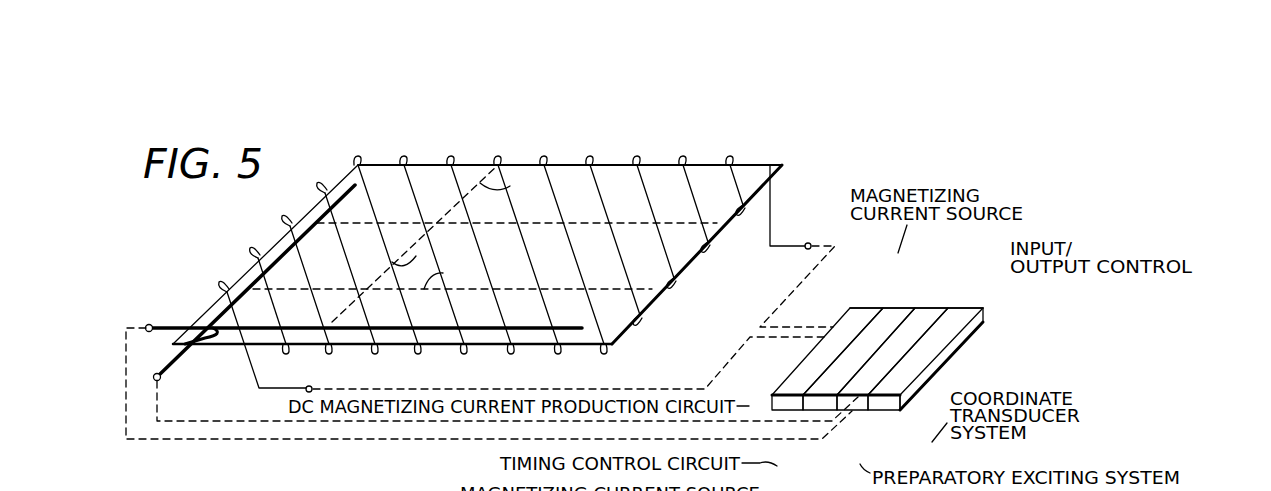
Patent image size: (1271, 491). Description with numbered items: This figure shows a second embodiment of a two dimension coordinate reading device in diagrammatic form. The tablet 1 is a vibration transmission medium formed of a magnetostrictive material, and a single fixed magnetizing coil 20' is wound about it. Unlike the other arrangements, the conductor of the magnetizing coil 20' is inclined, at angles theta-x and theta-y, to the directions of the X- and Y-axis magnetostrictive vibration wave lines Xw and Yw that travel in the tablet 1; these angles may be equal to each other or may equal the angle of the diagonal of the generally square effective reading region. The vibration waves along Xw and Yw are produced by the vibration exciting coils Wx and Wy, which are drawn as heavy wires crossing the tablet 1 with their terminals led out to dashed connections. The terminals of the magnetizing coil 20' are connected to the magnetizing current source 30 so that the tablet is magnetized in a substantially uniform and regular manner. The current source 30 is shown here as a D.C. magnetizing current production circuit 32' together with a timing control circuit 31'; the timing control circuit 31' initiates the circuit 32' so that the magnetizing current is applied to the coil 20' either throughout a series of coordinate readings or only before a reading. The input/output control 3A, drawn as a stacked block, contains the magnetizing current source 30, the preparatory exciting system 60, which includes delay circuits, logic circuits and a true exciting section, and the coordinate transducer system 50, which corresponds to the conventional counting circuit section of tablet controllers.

The tablet 1 is at (770, 166).
The magnetizing coil 20' is at (482, 259).
The magnetizing current source 30 is at (888, 303).
The input/output control 3A is at (954, 299).
The DC magnetizing current production circuit 32' is at (814, 359).
The timing control circuit 31' is at (809, 437).
The preparatory exciting system 60 is at (860, 410).
The coordinate transducer system 50 is at (890, 410).
The vibration exciting coil Wx is at (273, 252).
The vibration exciting coil Wy is at (170, 327).
The X-axis vibration wave line Xw is at (651, 291).
The Y-axis vibration wave line Yw is at (500, 164).